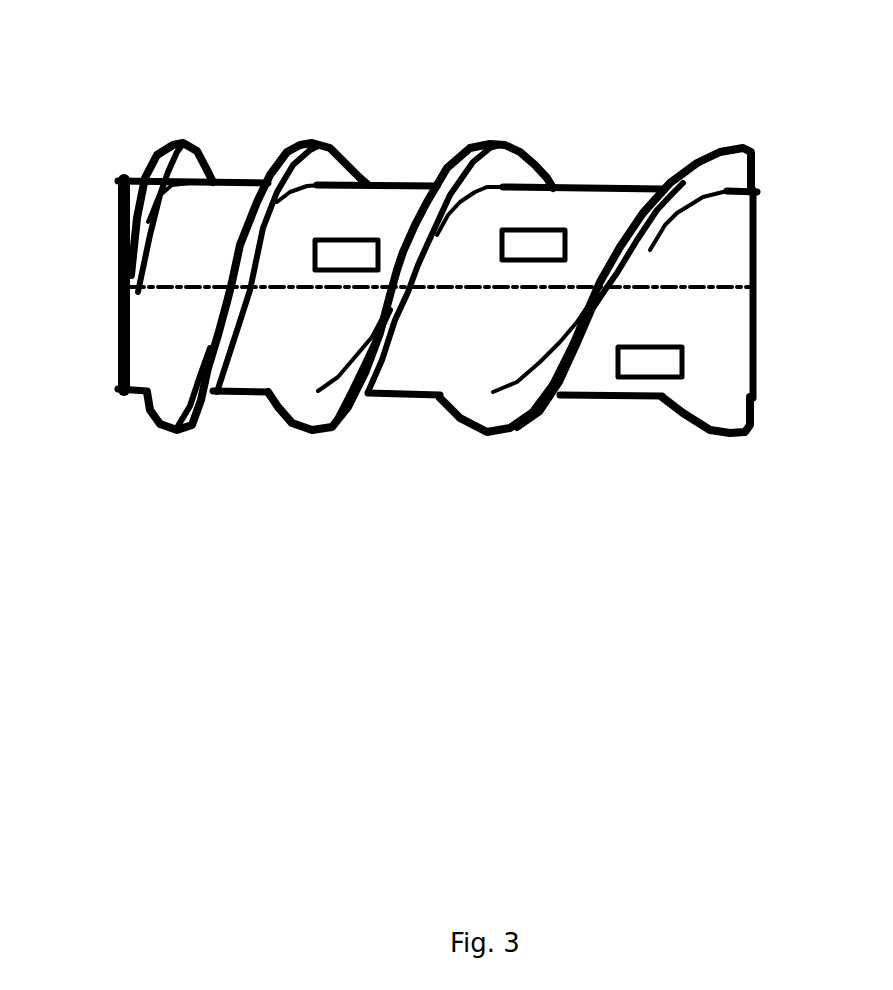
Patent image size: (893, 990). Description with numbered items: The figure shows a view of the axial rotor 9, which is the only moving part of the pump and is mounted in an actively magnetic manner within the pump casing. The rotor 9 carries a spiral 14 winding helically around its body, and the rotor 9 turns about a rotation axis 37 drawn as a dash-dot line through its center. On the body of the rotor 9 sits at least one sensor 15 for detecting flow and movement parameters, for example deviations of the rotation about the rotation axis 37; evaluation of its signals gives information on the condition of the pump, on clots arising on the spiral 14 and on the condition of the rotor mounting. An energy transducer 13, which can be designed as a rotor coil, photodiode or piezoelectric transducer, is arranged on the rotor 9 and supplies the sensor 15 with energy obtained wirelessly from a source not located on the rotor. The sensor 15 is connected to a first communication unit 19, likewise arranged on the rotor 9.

The rotor 9 is at (437, 383).
The energy transducer 13 is at (557, 158).
The spiral 14 is at (444, 236).
The sensor 15 is at (346, 138).
The first communication unit 19 is at (639, 474).
The rotation axis 37 is at (406, 382).